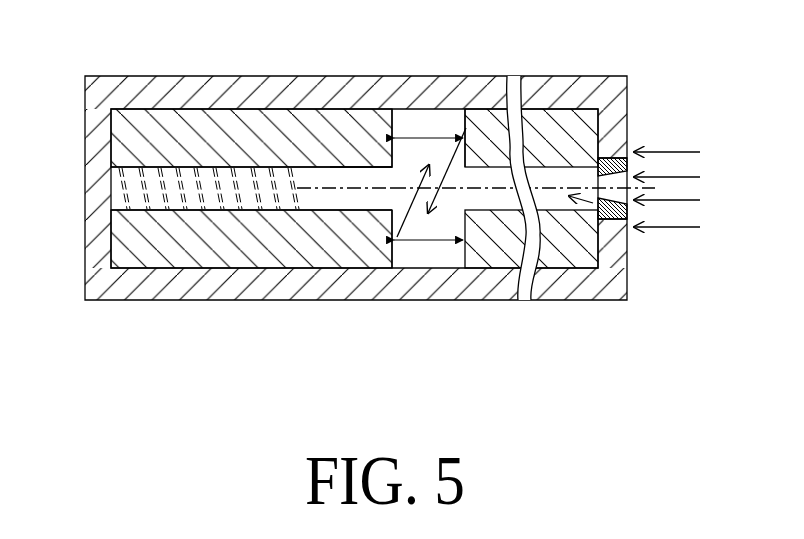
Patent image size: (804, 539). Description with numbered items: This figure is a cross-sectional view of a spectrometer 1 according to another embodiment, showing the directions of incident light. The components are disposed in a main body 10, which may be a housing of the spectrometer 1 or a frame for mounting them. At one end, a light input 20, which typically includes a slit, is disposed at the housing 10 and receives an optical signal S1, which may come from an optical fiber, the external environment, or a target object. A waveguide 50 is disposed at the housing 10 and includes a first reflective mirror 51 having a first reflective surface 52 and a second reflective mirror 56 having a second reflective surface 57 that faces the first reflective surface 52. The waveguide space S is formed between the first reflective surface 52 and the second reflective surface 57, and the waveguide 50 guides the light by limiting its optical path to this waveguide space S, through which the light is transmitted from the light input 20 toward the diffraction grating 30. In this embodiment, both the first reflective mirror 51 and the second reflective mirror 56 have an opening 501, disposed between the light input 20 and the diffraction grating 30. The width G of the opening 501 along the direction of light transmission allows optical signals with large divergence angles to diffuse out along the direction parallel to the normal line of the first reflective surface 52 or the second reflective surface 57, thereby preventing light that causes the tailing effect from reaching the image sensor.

The spectrometer 1 is at (395, 183).
The main body 10 is at (152, 91).
The light input 20 is at (612, 148).
The diffraction grating 30 is at (128, 188).
The waveguide 50 is at (312, 184).
The first reflective mirror 51 is at (276, 122).
The first reflective surface 52 is at (390, 168).
The second reflective mirror 56 is at (262, 258).
The second reflective surface 57 is at (343, 205).
The opening 501 is at (466, 128).
The width of the opening G is at (430, 135).
The waveguide space S is at (603, 213).
The optical signal S1 is at (677, 151).